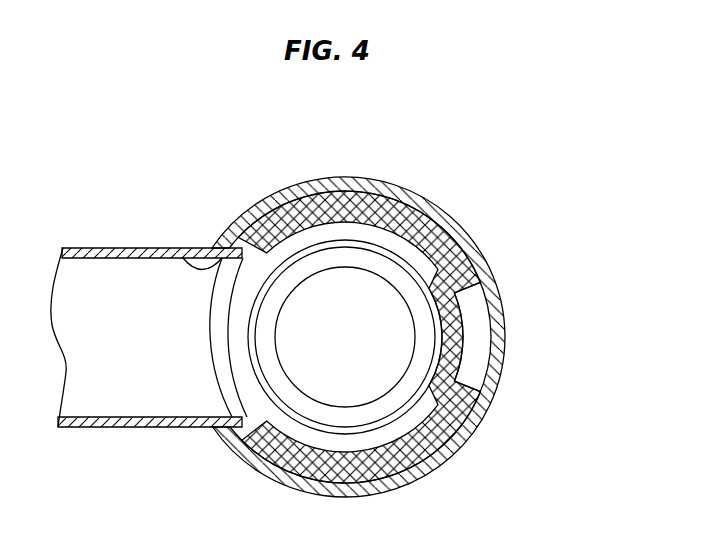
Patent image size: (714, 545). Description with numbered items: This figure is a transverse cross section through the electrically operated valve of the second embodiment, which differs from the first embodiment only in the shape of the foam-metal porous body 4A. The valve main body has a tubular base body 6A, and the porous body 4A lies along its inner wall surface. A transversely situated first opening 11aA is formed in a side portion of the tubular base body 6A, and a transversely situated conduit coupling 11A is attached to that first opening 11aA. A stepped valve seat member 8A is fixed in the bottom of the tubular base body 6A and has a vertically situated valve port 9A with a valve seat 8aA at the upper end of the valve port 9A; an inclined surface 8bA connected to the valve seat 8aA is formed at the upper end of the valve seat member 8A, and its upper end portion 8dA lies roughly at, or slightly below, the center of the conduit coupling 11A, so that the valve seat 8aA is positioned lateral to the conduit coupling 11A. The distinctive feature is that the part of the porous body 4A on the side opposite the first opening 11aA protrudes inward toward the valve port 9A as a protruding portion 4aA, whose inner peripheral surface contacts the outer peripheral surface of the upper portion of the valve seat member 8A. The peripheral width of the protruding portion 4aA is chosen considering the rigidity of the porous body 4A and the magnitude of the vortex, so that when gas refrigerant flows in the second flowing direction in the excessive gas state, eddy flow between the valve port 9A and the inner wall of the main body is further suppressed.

The porous body 4A is at (296, 196).
The protruding portion 4aA is at (463, 347).
The tubular base body 6A is at (368, 178).
The stepped valve seat member 8A is at (463, 317).
The valve seat 8aA is at (388, 377).
The inclined surface 8bA is at (388, 258).
The upper end portion of the inclined surface 8dA is at (422, 275).
The valve port 9A is at (287, 298).
The conduit coupling 11A is at (117, 247).
The first opening 11aA is at (180, 252).